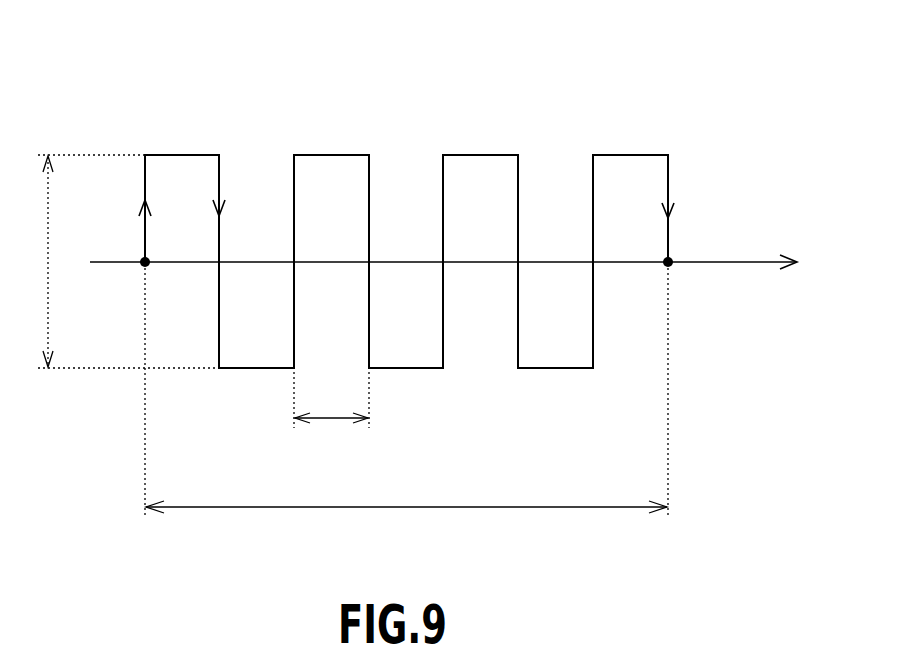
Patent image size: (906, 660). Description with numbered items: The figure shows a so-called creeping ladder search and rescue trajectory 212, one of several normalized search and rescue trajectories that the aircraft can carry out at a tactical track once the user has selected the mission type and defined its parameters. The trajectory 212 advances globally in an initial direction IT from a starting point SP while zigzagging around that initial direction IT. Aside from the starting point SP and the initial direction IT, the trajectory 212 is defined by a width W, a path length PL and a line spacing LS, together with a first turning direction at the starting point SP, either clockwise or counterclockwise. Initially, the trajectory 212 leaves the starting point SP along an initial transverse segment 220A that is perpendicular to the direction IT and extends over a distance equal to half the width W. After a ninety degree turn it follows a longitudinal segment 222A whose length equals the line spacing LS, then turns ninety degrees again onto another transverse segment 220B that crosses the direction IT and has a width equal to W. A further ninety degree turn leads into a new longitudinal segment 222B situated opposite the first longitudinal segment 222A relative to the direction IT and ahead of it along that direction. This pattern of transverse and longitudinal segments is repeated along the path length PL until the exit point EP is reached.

The search and rescue trajectory 212 is at (444, 100).
The longitudinal segment 222A is at (183, 155).
The longitudinal segment 222B is at (258, 368).
The initial transverse segment 220A is at (145, 231).
The transverse segment 220B is at (219, 192).
The starting point SP is at (142, 265).
The exit point EP is at (672, 265).
The initial direction IT is at (443, 281).
The width W is at (121, 261).
The line spacing LS is at (331, 415).
The path length PL is at (406, 404).